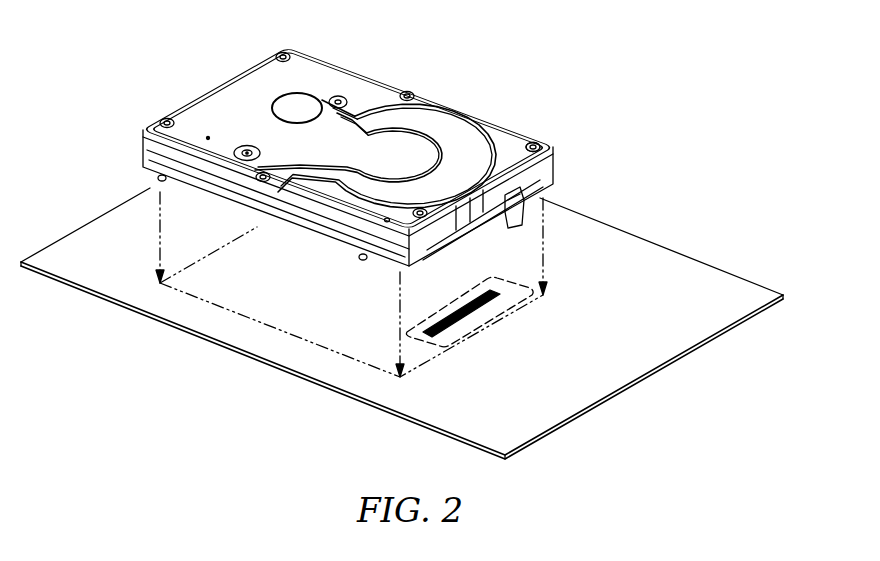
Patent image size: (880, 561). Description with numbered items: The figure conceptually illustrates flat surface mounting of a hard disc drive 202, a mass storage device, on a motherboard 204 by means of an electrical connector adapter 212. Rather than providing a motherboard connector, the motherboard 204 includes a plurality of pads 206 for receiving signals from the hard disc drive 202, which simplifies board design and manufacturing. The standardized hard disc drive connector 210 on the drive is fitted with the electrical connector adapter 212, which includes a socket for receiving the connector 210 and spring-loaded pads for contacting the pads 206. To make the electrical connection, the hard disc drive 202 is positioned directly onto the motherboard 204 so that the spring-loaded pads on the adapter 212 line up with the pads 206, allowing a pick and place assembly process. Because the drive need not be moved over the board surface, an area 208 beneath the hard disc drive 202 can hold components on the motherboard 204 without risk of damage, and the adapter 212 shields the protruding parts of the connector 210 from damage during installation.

The hard disc drive 202 is at (473, 107).
The motherboard 204 is at (716, 252).
The pads 206 is at (458, 337).
The area 208 is at (300, 338).
The hard disc drive connector 210 is at (541, 143).
The electrical connector adapter 212 is at (520, 228).